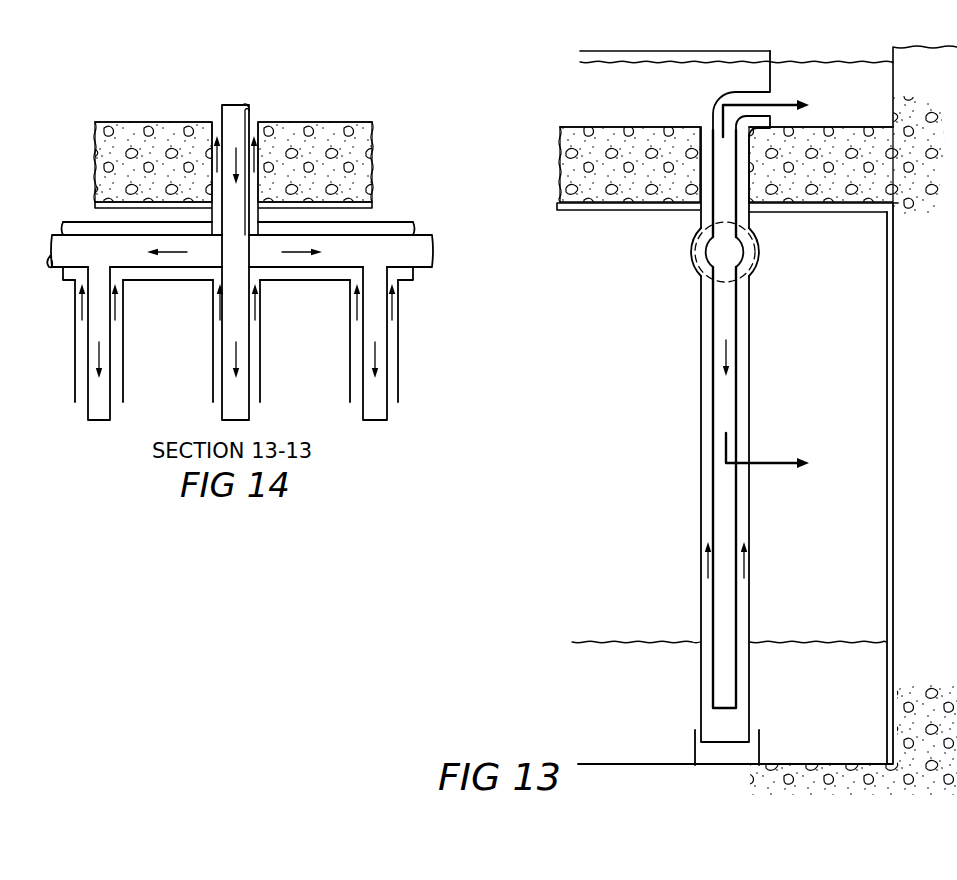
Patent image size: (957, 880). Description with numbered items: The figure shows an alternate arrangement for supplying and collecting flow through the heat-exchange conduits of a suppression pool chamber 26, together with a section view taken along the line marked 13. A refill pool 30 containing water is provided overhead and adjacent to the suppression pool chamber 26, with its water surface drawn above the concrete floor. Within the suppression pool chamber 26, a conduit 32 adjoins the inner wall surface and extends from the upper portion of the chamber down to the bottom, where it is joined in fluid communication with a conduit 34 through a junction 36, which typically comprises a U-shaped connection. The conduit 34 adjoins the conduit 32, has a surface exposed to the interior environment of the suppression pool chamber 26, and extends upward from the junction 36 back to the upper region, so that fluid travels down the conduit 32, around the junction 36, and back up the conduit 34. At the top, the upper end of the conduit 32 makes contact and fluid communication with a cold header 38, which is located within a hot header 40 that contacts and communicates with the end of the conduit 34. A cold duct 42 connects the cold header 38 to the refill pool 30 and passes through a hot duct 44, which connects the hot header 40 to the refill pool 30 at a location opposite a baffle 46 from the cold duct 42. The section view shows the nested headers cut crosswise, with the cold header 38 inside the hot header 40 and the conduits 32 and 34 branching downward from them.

In FIG. 13, the suppression pool chamber 26 is at (592, 568).
In FIG. 13, the refill pool 30 is at (803, 58).
In FIG. 14, the conduit 32 is at (112, 410).
In FIG. 13, the conduit 32 is at (725, 415).
In FIG. 14, the conduit 34 is at (123, 338).
In FIG. 13, the conduit 34 is at (705, 513).
In FIG. 13, the junction 36 is at (713, 725).
In FIG. 14, the cold header 38 is at (422, 272).
In FIG. 13, the cold header 38 is at (708, 262).
In FIG. 14, the hot header 40 is at (407, 222).
In FIG. 13, the hot header 40 is at (698, 240).
In FIG. 14, the cold duct 42 is at (222, 105).
In FIG. 13, the cold duct 42 is at (778, 97).
In FIG. 14, the hot duct 44 is at (253, 120).
In FIG. 13, the hot duct 44 is at (703, 122).
In FIG. 13, the baffle 46 is at (605, 51).
In FIG. 13, the section line 13- 13 is at (781, 290).